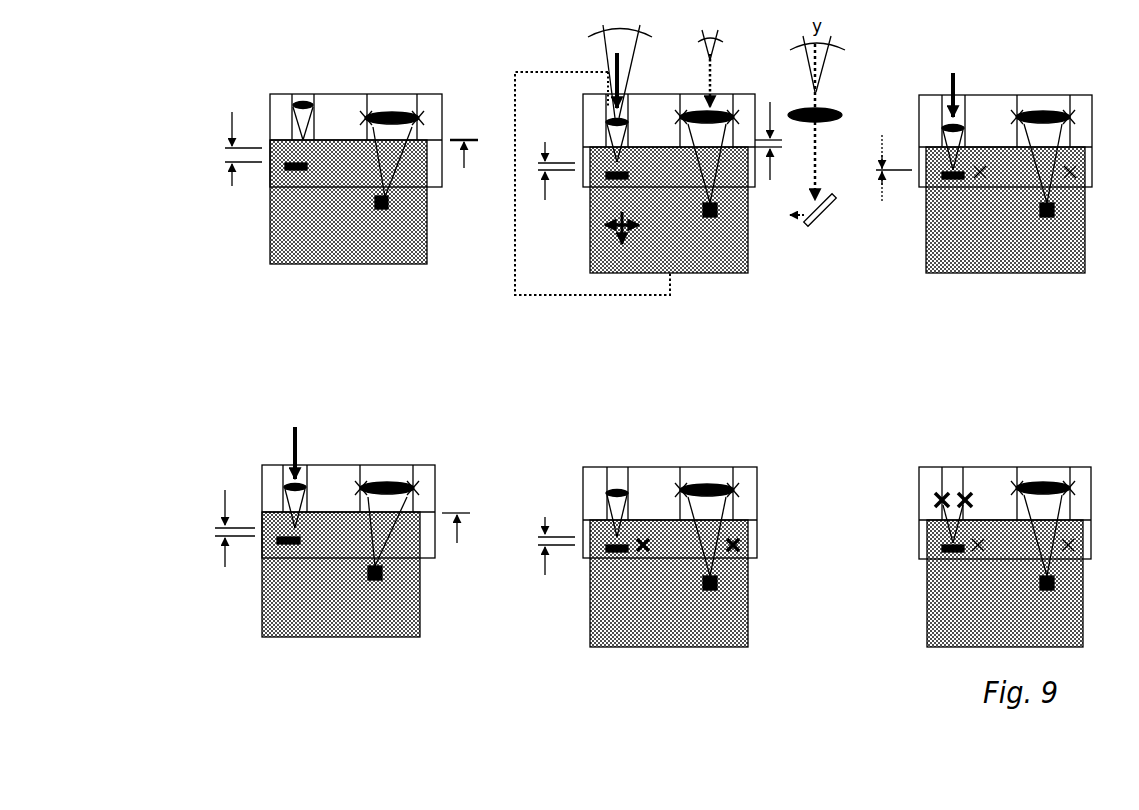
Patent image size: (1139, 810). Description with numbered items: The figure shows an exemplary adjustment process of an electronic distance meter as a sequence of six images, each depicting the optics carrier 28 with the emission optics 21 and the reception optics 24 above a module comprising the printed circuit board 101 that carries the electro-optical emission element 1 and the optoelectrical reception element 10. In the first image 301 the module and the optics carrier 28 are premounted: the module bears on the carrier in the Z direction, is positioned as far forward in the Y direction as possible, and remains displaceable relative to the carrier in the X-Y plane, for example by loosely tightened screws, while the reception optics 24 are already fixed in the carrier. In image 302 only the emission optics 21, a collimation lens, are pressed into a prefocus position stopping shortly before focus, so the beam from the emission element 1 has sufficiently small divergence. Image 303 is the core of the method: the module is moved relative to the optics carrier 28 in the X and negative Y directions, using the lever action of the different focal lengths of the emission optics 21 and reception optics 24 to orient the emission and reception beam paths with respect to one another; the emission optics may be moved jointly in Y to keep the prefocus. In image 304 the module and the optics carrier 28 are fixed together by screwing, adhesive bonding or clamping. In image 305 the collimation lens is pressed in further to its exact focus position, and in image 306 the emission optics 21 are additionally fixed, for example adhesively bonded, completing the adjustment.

The electro-optical emission element 1 is at (315, 249).
The optoelectrical reception element 10 is at (385, 210).
The emission optics 21 is at (305, 93).
The reception optics 24 is at (385, 105).
The optics carrier 28 is at (435, 190).
The printed circuit board 101 is at (348, 257).
The first image 301 is at (264, 81).
The image 302 is at (305, 531).
The image 303 is at (646, 149).
The image 304 is at (631, 540).
The image 305 is at (983, 164).
The image 306 is at (979, 538).